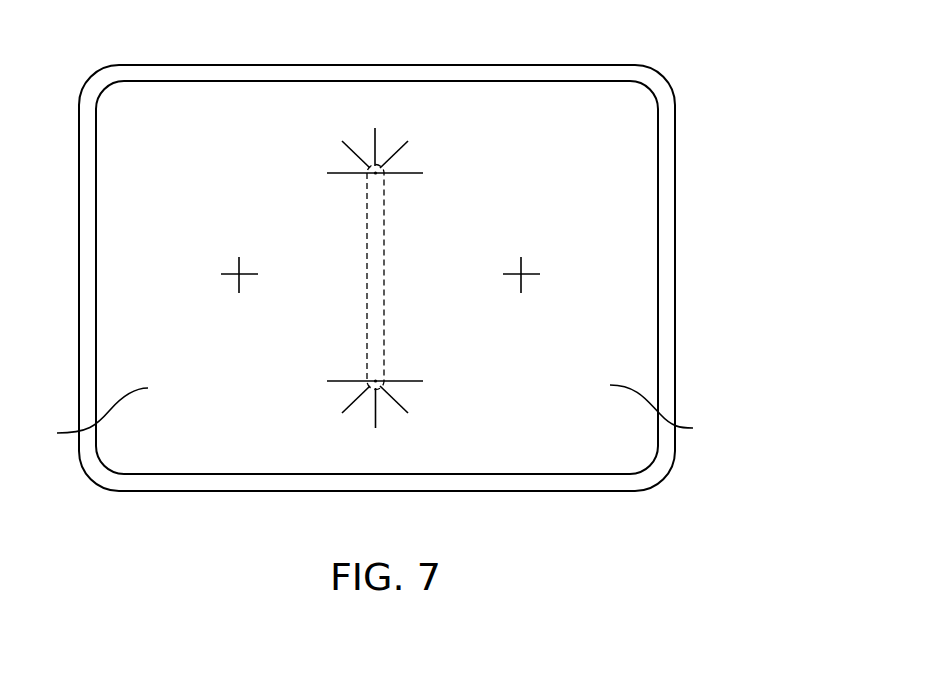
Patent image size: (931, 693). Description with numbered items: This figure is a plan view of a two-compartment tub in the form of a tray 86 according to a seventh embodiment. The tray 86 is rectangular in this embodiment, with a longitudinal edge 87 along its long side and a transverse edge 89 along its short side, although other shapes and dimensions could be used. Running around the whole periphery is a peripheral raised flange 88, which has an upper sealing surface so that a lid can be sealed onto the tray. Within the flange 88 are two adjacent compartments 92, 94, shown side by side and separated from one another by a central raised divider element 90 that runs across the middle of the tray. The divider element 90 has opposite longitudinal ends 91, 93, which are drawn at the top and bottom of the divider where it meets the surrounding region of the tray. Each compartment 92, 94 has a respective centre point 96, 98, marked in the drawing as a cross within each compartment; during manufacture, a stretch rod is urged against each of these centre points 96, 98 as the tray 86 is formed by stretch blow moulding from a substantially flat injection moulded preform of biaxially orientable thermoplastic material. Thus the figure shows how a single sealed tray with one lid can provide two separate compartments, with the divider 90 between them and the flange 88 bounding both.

The tray 86 is at (403, 245).
The longitudinal edge 87 is at (330, 66).
The peripheral raised flange 88 is at (668, 173).
The transverse edge 89 is at (668, 348).
The central raised divider element 90 is at (385, 218).
The longitudinal end 91 is at (382, 170).
The compartment 92 is at (91, 415).
The longitudinal end 93 is at (383, 387).
The compartment 94 is at (664, 411).
The centre point 96 is at (243, 270).
The centre point 98 is at (525, 270).